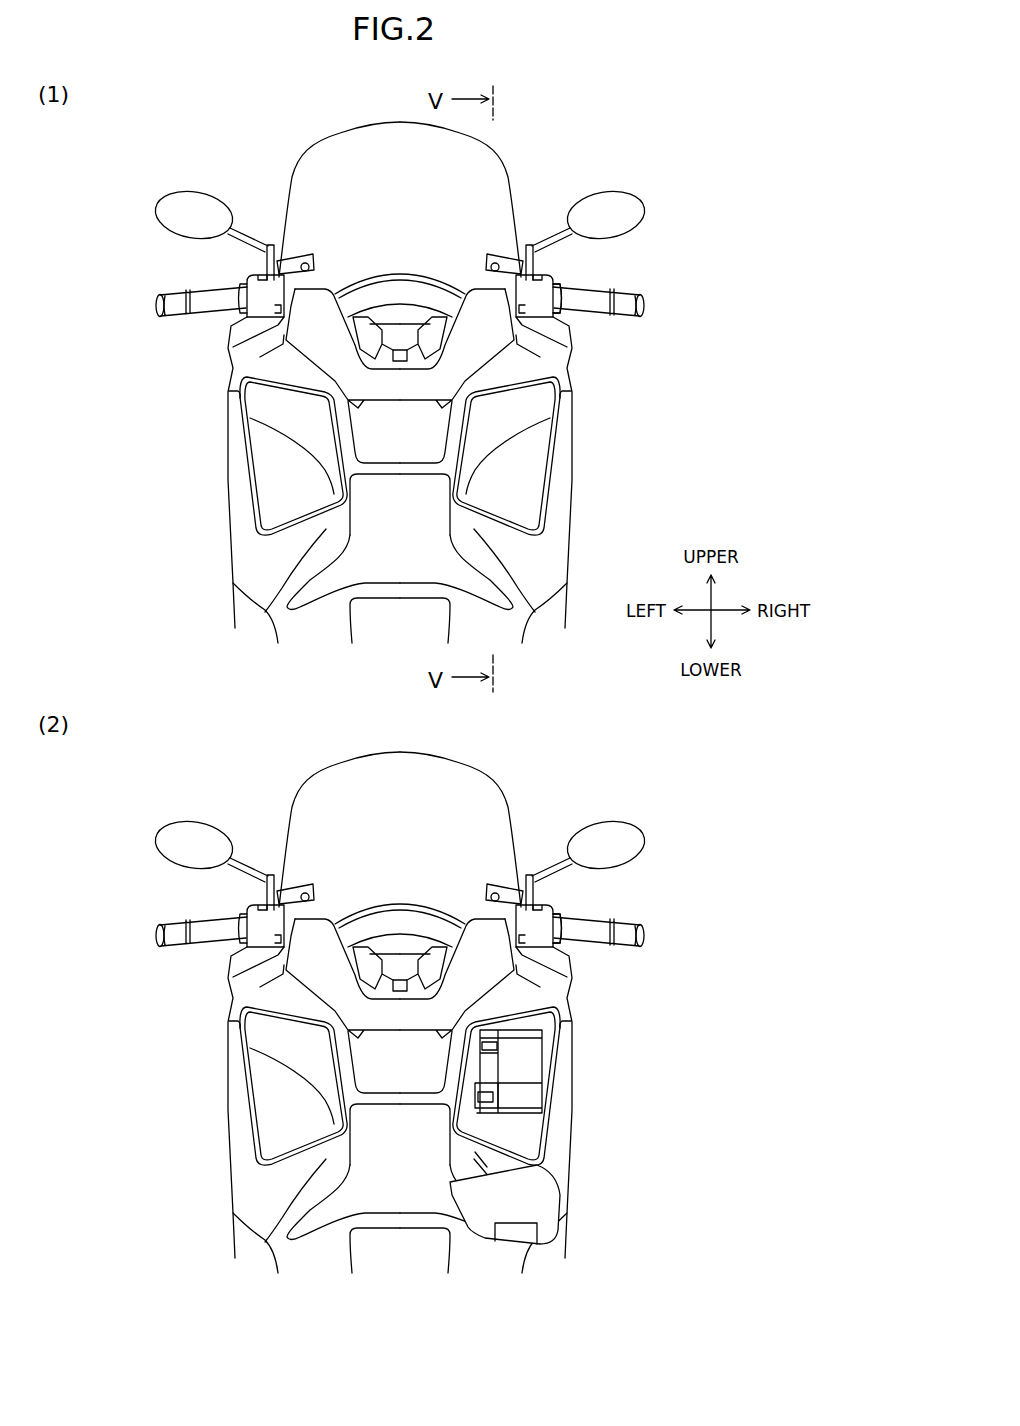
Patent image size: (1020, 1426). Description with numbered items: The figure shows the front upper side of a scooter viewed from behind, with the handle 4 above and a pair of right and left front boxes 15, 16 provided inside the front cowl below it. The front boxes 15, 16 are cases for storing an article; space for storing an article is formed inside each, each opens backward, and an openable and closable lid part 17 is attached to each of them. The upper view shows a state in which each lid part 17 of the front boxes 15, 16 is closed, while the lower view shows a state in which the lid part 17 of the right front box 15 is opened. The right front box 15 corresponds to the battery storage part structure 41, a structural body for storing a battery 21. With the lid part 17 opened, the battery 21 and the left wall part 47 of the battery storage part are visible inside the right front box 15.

The handle 4 is at (203, 297).
The right front box 15 is at (555, 495).
The battery storage part structure 41 is at (579, 771).
The left front box 16 is at (243, 488).
The lid part 17 is at (283, 410).
The battery 21 is at (550, 1071).
The left wall part 47 is at (549, 1079).